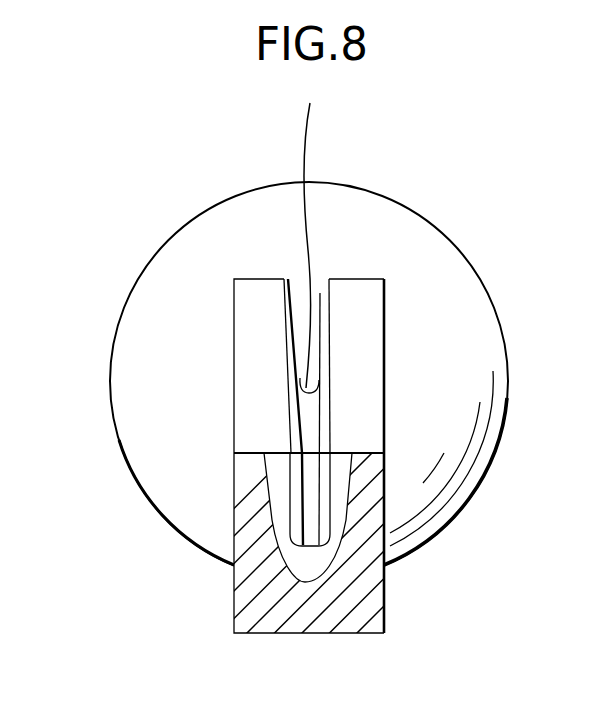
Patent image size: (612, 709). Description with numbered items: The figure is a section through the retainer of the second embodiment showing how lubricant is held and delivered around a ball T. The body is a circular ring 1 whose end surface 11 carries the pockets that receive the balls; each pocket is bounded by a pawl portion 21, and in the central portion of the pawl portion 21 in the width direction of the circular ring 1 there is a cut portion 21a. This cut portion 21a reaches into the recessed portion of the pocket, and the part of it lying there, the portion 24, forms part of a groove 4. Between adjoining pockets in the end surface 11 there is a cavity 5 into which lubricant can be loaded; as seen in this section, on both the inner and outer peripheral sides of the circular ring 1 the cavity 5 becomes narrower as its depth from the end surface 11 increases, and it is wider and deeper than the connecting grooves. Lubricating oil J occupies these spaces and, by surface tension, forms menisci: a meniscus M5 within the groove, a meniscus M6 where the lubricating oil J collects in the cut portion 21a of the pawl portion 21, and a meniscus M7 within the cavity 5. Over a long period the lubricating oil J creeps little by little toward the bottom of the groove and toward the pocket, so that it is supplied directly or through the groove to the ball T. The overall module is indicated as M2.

The ball T is at (195, 216).
The meniscus M6 is at (310, 231).
The cut portion 21a is at (325, 293).
The pawl portion 21 is at (353, 293).
The lubricating oil J is at (313, 405).
The portion of the cut portion 24 is at (314, 446).
The end surface 11 is at (368, 453).
The meniscus M5 is at (310, 470).
The meniscus M7 is at (316, 488).
The groove 4 is at (290, 502).
The cavity 5 is at (405, 540).
The circular ring 1 is at (250, 593).
The optical module block M2 is at (308, 371).